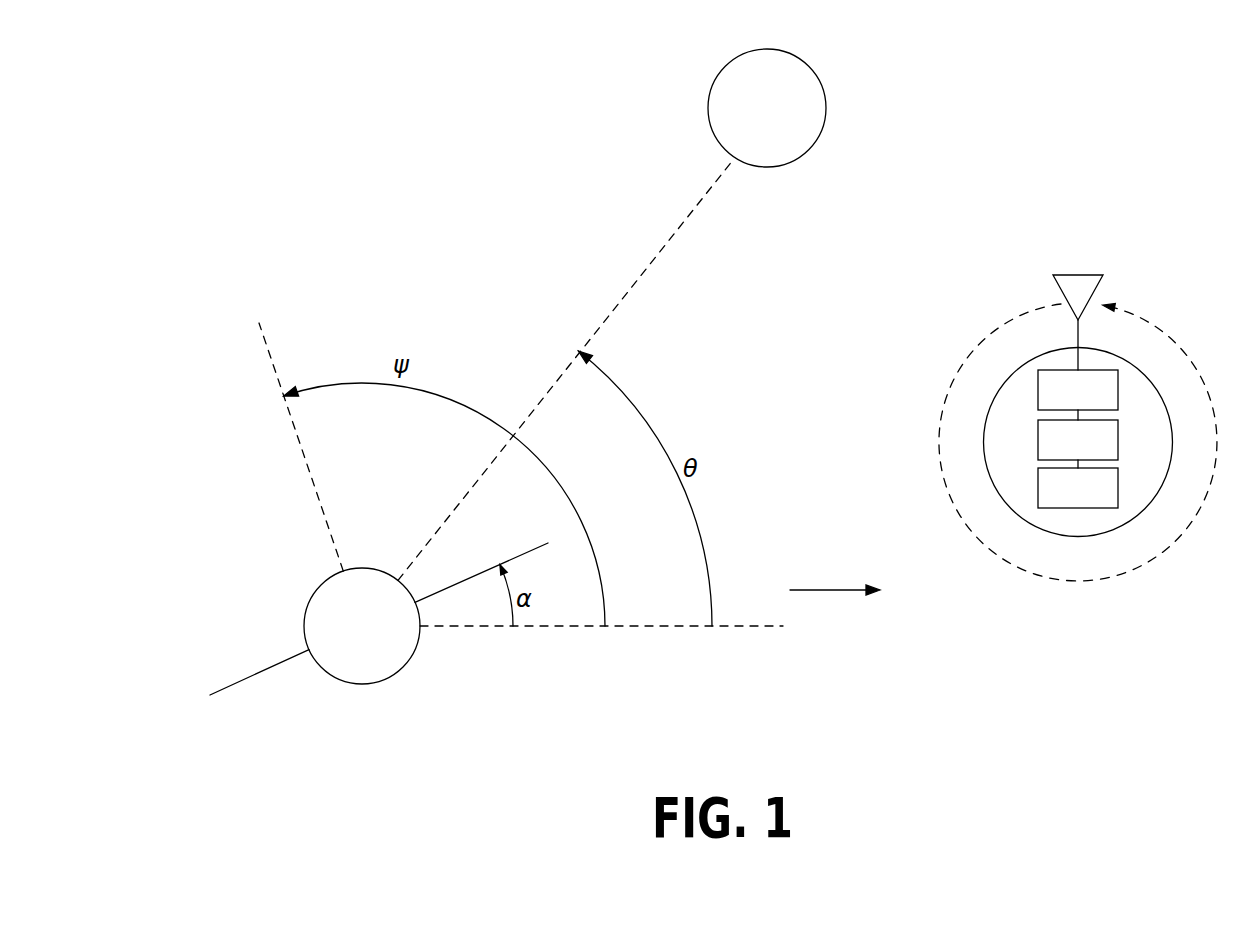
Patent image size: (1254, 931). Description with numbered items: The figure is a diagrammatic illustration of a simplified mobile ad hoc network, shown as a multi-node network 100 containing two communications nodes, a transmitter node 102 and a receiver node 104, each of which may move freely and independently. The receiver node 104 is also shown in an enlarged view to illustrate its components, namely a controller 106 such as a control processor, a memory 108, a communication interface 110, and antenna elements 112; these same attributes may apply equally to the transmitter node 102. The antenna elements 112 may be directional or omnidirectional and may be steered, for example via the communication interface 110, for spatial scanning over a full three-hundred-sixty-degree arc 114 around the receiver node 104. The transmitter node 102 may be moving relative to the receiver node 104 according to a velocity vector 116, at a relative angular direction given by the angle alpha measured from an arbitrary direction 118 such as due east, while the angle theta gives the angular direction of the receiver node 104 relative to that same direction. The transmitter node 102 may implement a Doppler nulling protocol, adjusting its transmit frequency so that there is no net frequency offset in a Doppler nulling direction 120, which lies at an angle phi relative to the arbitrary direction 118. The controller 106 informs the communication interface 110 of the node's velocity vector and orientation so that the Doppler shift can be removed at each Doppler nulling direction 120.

The multi-node network 100 is at (205, 140).
The transmitter node 102 is at (310, 598).
The receiver node 104 is at (722, 70).
The controller 106 is at (1078, 440).
The memory 108 is at (1078, 488).
The communication interface 110 is at (1078, 390).
The antenna elements 112 is at (1065, 274).
The 360-degree arc 114 is at (1120, 573).
The velocity vector 116 is at (457, 584).
The arbitrary direction 118 is at (814, 591).
The Doppler nulling direction 120 is at (262, 352).